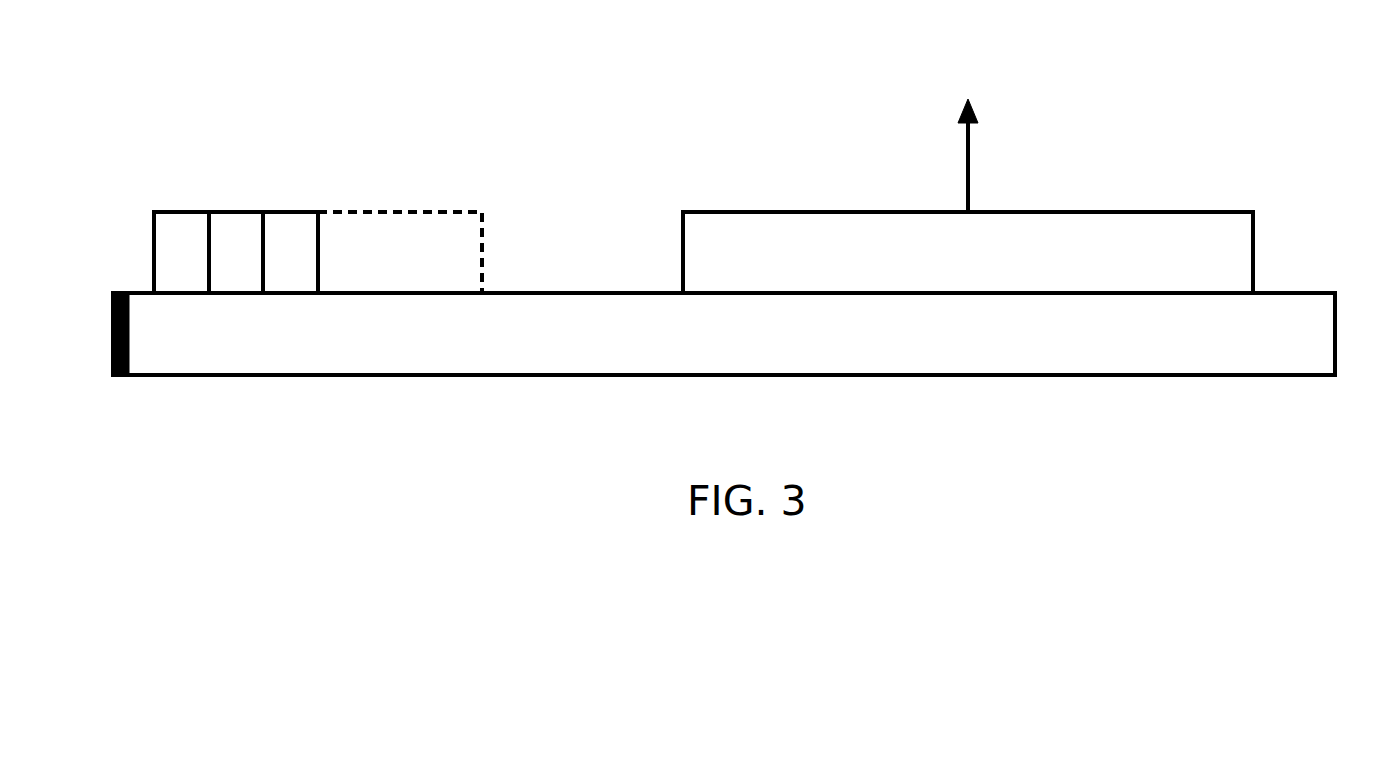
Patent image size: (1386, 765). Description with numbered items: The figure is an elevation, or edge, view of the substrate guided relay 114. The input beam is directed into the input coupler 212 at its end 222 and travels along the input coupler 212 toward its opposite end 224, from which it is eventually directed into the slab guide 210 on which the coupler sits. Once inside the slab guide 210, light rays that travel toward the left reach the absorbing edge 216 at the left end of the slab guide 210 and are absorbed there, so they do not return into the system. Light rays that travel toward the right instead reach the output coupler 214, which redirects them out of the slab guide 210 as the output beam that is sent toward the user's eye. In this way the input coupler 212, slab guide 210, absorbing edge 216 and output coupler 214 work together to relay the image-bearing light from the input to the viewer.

The substrate guided relay 114 is at (1272, 108).
The slab guide 210 is at (1307, 293).
The input coupler 212 is at (183, 212).
The output coupler 214 is at (710, 212).
The absorbing edge 216 is at (113, 313).
The end 222 is at (237, 212).
The end 224 is at (452, 212).